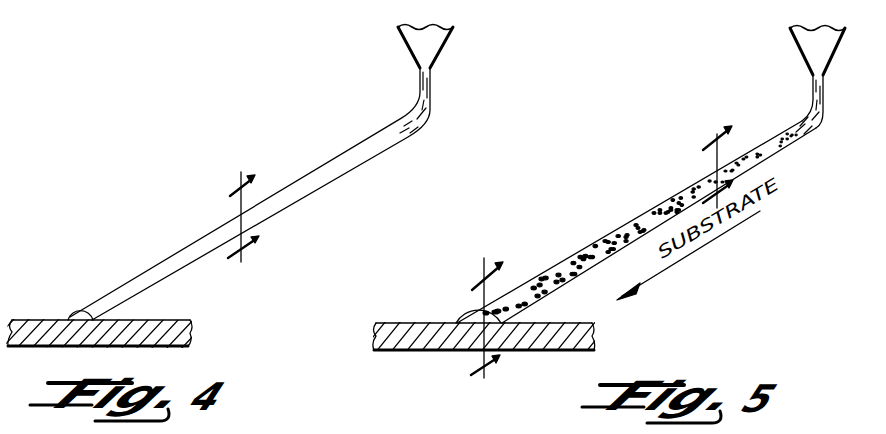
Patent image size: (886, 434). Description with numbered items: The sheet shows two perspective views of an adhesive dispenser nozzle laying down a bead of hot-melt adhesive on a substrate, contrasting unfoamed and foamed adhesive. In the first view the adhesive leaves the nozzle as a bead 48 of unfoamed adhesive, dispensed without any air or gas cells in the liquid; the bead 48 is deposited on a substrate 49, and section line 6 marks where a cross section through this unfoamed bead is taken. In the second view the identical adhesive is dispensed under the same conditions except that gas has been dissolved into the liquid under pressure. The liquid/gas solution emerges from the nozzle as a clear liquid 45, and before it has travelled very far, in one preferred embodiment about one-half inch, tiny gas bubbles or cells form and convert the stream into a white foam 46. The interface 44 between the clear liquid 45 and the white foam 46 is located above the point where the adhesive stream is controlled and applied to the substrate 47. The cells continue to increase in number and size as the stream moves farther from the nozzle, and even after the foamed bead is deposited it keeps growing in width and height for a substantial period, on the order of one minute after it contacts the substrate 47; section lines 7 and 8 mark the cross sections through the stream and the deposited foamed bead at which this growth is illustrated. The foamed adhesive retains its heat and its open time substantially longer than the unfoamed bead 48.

In FIG. 5, the interface 44 is at (790, 137).
In FIG. 5, the clear liquid 45 is at (824, 97).
In FIG. 5, the white foam 46 is at (602, 238).
In FIG. 5, the substrate 47 is at (386, 322).
In FIG. 4, the bead 48 is at (290, 190).
In FIG. 4, the substrate 49 is at (184, 320).
In FIG. 4, the section line 6- 6 is at (238, 220).
In FIG. 5, the section line 7- 7 is at (726, 158).
In FIG. 5, the section line 8- 8 is at (491, 309).